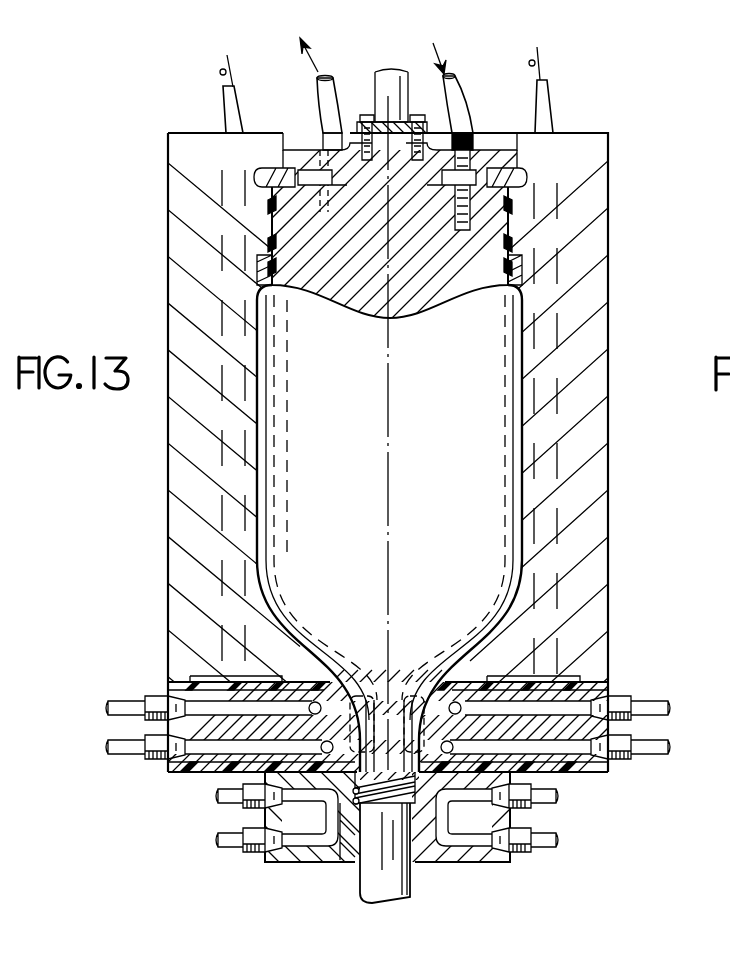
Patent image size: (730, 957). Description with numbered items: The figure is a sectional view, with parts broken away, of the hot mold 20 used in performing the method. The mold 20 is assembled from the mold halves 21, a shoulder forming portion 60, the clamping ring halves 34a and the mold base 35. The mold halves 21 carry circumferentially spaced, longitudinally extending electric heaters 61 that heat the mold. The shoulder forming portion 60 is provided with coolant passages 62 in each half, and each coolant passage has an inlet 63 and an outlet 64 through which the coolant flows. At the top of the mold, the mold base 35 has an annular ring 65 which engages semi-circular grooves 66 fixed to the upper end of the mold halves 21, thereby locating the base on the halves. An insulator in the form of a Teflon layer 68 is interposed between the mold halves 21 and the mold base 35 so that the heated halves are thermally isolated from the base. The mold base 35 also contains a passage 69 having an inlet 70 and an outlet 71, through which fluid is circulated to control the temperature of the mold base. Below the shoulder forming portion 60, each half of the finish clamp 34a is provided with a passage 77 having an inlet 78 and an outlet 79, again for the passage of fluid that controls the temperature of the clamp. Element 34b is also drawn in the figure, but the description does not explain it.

The hot mold 20 is at (586, 344).
The mold halves 21 is at (172, 480).
The mold base 35 is at (497, 220).
The Teflon layer 68 is at (513, 256).
The passage 69 is at (328, 310).
The semi-circular grooves 66 is at (266, 168).
The annular ring 65 is at (300, 170).
The electric heaters 61 is at (229, 110).
The inlet 70 is at (453, 82).
The outlet 71 is at (334, 82).
The shoulder forming portion 60 is at (580, 692).
The coolant passages 62 is at (347, 668).
The inlet 63 is at (108, 747).
The outlet 64 is at (108, 708).
The passage 77 is at (280, 863).
The inlet 78 is at (210, 840).
The outlet 79 is at (213, 793).
The clamping ring halves 34a is at (342, 848).
The nozzle 34b is at (410, 888).